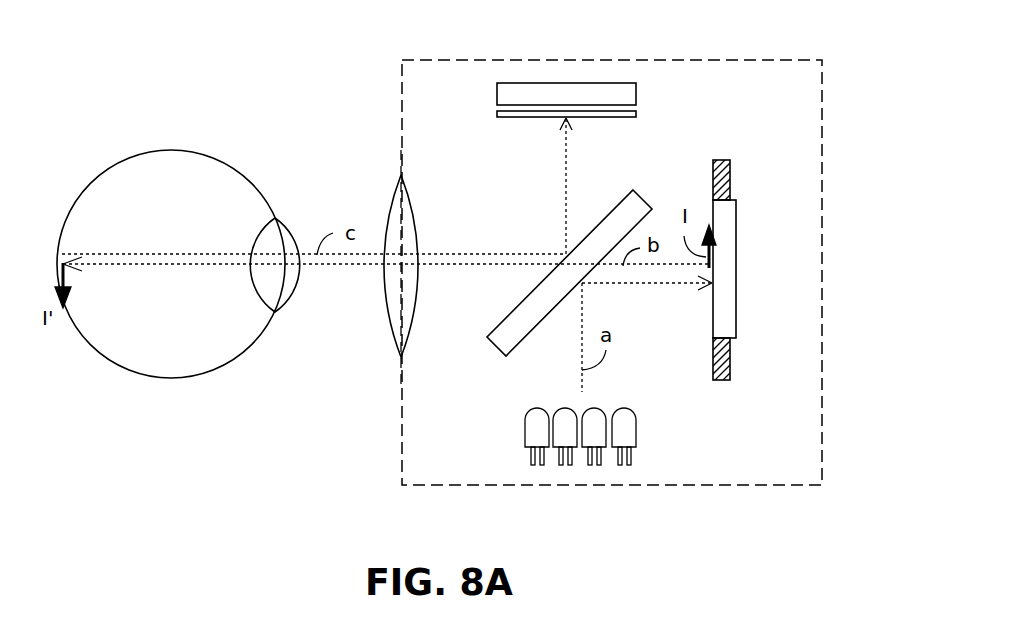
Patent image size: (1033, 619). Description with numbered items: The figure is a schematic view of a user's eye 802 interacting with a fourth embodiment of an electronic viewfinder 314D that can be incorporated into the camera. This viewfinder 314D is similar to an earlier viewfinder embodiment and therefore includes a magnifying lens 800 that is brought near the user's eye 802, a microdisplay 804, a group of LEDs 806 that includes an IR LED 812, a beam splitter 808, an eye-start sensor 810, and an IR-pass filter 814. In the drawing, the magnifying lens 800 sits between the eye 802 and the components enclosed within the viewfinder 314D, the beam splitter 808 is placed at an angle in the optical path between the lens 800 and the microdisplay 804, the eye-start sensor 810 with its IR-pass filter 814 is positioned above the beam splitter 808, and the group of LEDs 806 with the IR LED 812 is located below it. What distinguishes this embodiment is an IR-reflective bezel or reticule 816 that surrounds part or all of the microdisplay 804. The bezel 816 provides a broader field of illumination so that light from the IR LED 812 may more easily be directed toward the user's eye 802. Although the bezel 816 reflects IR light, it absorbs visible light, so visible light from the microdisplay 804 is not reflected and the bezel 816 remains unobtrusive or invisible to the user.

The electronic viewfinder 314D is at (755, 60).
The magnifying lens 800 is at (413, 227).
The user's eye 802 is at (230, 141).
The microdisplay 804 is at (737, 218).
The group of LEDs 806 is at (638, 414).
The beam splitter 808 is at (618, 217).
The eye-start sensor 810 is at (637, 97).
The IR LED 812 is at (650, 438).
The IR-pass filter 814 is at (508, 118).
The IR-reflective bezel 816 is at (730, 367).